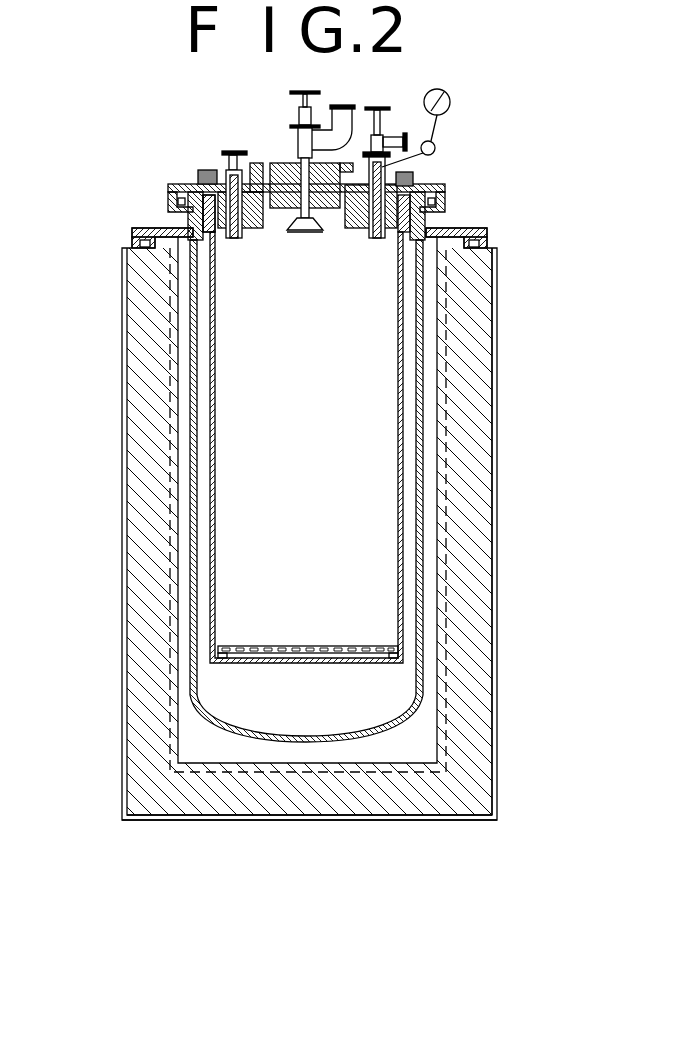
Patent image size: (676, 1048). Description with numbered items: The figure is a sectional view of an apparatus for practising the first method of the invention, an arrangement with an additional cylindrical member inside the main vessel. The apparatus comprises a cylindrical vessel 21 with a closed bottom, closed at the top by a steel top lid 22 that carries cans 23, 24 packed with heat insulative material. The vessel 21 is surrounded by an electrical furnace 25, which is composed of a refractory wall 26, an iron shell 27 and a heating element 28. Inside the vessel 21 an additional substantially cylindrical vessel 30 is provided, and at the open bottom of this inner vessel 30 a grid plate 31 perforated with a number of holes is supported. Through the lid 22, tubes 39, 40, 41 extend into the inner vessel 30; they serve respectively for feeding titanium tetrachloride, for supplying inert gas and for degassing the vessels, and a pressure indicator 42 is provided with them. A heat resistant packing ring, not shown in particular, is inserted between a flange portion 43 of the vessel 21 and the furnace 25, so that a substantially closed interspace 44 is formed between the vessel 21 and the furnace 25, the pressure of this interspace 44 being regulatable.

The cylindrical vessel 21 is at (424, 704).
The top lid 22 is at (438, 188).
The can 23 is at (287, 175).
The can 24 is at (238, 207).
The electrical furnace 25 is at (500, 595).
The refractory wall 26 is at (462, 548).
The iron shell 27 is at (493, 488).
The heating element 28 is at (447, 440).
The inner cylindrical vessel 30 is at (403, 382).
The grid plate 31 is at (363, 653).
The tube 39 is at (306, 232).
The tube 40 is at (380, 238).
The tube 41 is at (227, 240).
The pressure indicator 42 is at (450, 102).
The flange portion 43 is at (458, 233).
The interspace 44 is at (195, 742).